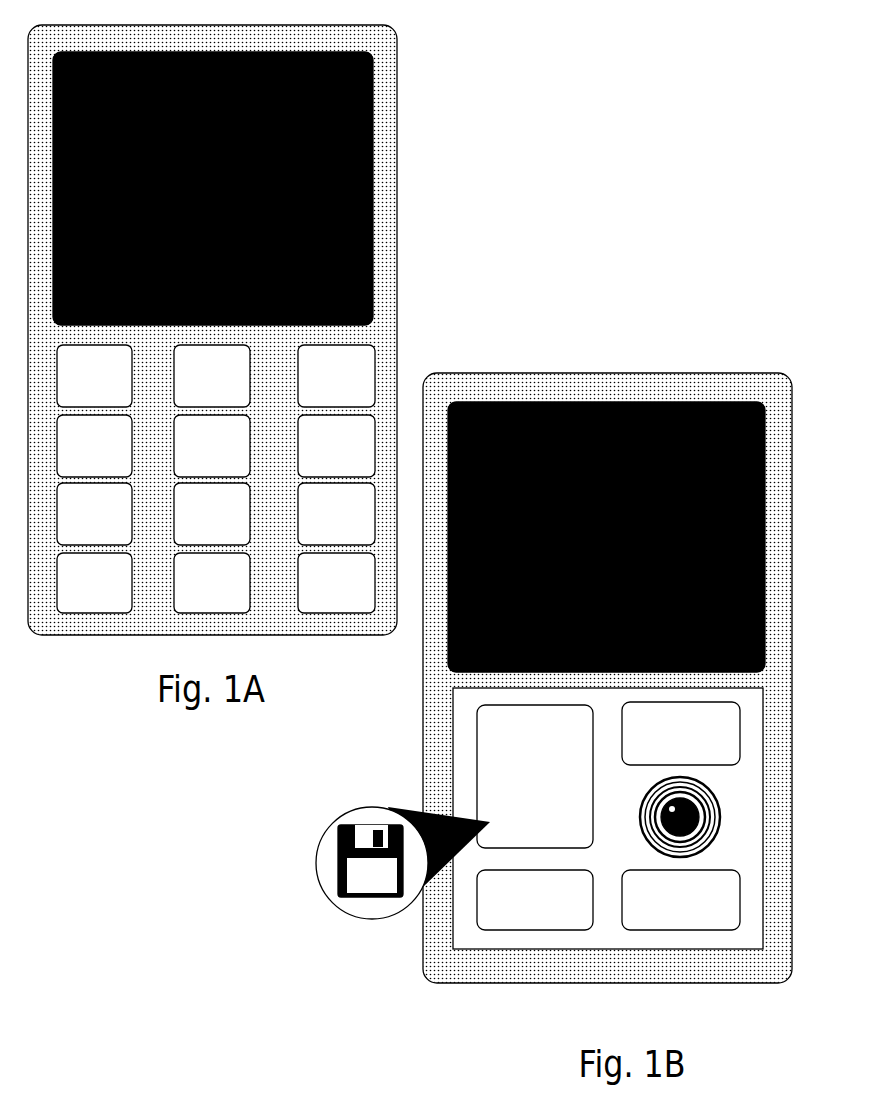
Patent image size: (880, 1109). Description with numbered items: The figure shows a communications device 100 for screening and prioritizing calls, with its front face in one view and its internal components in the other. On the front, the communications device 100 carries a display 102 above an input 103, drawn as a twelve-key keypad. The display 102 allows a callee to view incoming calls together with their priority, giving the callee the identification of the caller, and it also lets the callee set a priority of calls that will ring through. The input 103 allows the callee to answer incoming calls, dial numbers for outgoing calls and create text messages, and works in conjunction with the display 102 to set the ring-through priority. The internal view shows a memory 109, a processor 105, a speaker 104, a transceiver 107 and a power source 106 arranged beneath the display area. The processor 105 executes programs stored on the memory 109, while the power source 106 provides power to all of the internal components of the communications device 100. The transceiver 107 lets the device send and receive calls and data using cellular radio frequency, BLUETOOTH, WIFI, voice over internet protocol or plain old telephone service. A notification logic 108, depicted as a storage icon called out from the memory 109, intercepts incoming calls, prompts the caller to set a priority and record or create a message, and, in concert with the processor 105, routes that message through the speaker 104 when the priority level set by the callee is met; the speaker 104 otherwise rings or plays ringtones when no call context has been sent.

In FIG. 1A, the communications device 100 is at (282, 325).
In FIG. 1B, the communications device 100 is at (607, 647).
In FIG. 1A, the display 102 is at (278, 188).
In FIG. 1A, the input 103 is at (206, 528).
In FIG. 1B, the speaker 104 is at (760, 785).
In FIG. 1B, the processor 105 is at (746, 708).
In FIG. 1B, the power source 106 is at (734, 940).
In FIG. 1B, the transceiver 107 is at (476, 942).
In FIG. 1B, the notification logic 108 is at (353, 870).
In FIG. 1B, the memory 109 is at (469, 776).